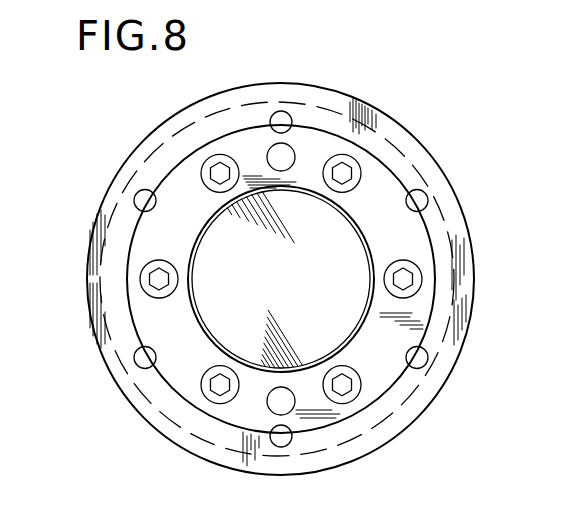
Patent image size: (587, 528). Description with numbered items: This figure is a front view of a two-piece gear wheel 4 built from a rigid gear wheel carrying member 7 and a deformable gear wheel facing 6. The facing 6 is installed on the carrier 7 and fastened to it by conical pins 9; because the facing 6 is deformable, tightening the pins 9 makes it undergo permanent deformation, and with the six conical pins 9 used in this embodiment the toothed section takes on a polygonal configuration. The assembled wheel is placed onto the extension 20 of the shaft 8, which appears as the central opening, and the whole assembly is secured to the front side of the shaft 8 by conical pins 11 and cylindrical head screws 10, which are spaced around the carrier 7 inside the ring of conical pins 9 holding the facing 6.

The gear wheel 4 is at (146, 132).
The gear wheel facing 6 is at (390, 123).
The gear wheel carrying member 7 is at (418, 247).
The shaft 8 is at (357, 224).
The conical pins 9 is at (280, 119).
The cylindrical head screws 10 is at (156, 278).
The conical pins 11 is at (286, 154).
The extension 20 is at (236, 306).